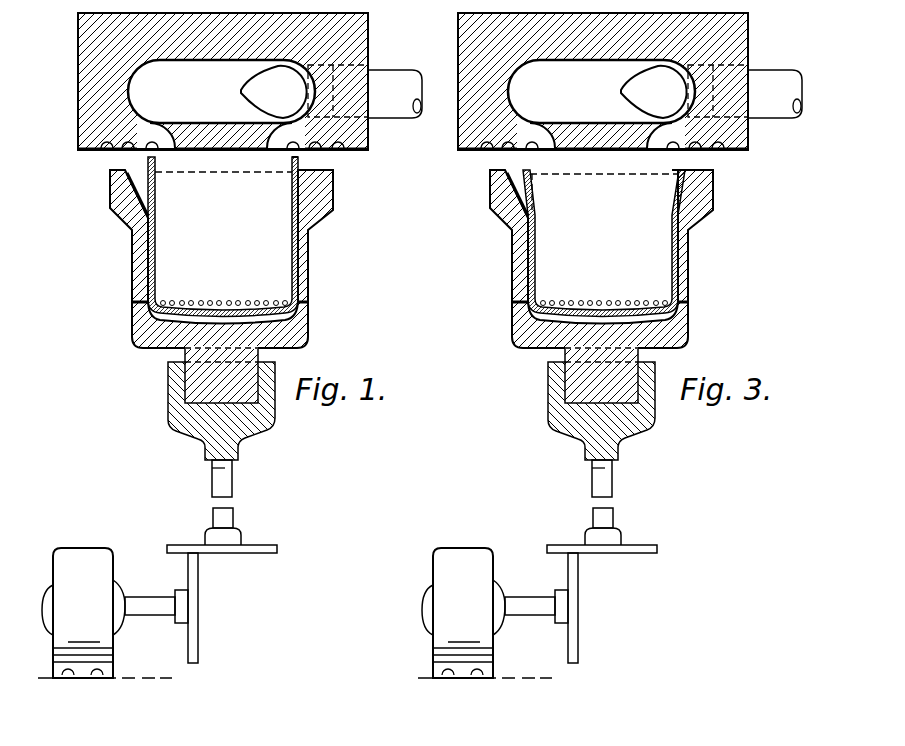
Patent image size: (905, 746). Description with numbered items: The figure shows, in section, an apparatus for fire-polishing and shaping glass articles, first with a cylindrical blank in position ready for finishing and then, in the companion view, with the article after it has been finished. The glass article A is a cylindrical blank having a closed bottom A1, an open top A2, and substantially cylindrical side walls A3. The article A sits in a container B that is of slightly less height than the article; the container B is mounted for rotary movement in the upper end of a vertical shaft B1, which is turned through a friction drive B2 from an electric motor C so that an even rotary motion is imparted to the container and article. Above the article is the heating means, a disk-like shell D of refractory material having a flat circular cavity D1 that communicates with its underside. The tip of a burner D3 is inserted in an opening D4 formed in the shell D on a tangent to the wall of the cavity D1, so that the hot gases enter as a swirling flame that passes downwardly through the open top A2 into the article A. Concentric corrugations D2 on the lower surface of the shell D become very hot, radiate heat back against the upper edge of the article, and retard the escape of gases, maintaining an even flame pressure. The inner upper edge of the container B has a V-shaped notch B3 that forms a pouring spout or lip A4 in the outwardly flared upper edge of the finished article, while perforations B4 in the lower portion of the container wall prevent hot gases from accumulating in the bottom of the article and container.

In FIG. 1, the disk-like shell D is at (240, 92).
In FIG. 3, the disk-like shell D is at (630, 98).
In FIG. 1, the flat circular cavity D1 is at (221, 91).
In FIG. 3, the flat circular cavity D1 is at (601, 91).
In FIG. 1, the concentric corrugations D2 is at (145, 151).
In FIG. 3, the concentric corrugations D2 is at (629, 162).
In FIG. 1, the burner D3 is at (365, 91).
In FIG. 3, the burner D3 is at (745, 91).
In FIG. 1, the opening D4 is at (274, 92).
In FIG. 3, the opening D4 is at (654, 92).
In FIG. 1, the glass article A is at (220, 233).
In FIG. 3, the glass article A is at (607, 243).
In FIG. 1, the closed bottom A1 is at (187, 312).
In FIG. 3, the closed bottom A1 is at (604, 288).
In FIG. 1, the open top A2 is at (300, 158).
In FIG. 3, the open top A2 is at (712, 190).
In FIG. 1, the side walls A3 is at (135, 240).
In FIG. 3, the side walls A3 is at (490, 256).
In FIG. 3, the pouring spout or lip A4 is at (596, 192).
In FIG. 1, the container B is at (205, 259).
In FIG. 3, the container B is at (592, 259).
In FIG. 1, the vertical shaft B1 is at (222, 478).
In FIG. 3, the vertical shaft B1 is at (597, 429).
In FIG. 1, the friction drive B2 is at (188, 548).
In FIG. 3, the friction drive B2 is at (581, 585).
In FIG. 1, the V-shaped notch B3 is at (135, 186).
In FIG. 3, the V-shaped notch B3 is at (491, 201).
In FIG. 1, the perforations B4 is at (296, 302).
In FIG. 3, the perforations B4 is at (575, 301).
In FIG. 1, the electric motor C is at (105, 613).
In FIG. 3, the electric motor C is at (485, 613).